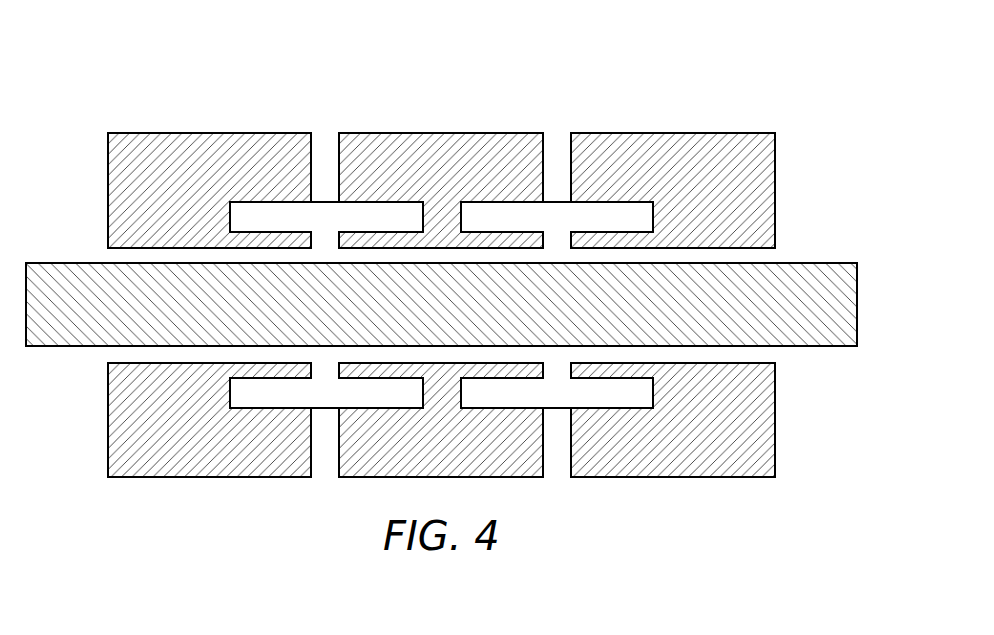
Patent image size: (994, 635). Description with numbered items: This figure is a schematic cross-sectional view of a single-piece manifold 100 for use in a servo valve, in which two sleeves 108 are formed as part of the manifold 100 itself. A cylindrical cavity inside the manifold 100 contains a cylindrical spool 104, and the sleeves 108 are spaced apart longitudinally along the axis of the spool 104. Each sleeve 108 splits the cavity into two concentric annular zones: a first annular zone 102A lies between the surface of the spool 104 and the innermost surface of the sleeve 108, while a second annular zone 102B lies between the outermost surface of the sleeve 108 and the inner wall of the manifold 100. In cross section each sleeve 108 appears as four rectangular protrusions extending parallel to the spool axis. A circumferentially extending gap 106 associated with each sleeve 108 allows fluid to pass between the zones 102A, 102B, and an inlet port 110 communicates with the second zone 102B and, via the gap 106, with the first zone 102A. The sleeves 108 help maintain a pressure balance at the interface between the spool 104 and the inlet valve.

The single-piece manifold 100 is at (756, 73).
The first annular zone 102A is at (268, 257).
The second annular zone 102B is at (626, 217).
The spool 104 is at (825, 337).
The gap 106 is at (320, 237).
The sleeve 108 is at (298, 370).
The inlet port 110 is at (325, 140).